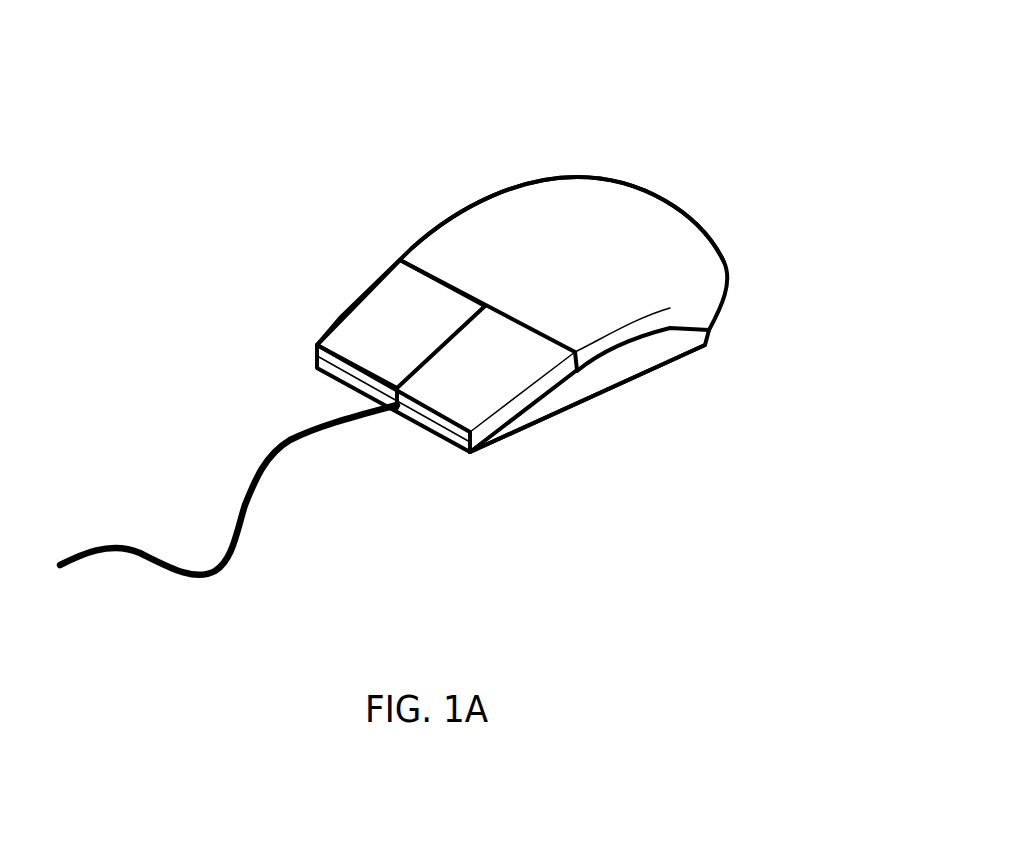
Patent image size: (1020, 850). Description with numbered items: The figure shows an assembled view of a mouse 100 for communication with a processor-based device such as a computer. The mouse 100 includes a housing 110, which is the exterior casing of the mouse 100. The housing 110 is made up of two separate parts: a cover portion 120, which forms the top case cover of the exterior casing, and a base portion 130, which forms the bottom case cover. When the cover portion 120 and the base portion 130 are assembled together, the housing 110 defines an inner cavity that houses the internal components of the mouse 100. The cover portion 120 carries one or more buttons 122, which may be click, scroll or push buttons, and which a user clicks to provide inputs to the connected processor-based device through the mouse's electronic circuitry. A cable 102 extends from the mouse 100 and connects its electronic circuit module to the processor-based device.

The mouse 100 is at (695, 102).
The cable 102 is at (262, 465).
The housing 110 is at (402, 245).
The cover portion 120 is at (557, 223).
The buttons 122 is at (380, 322).
The base portion 130 is at (602, 370).